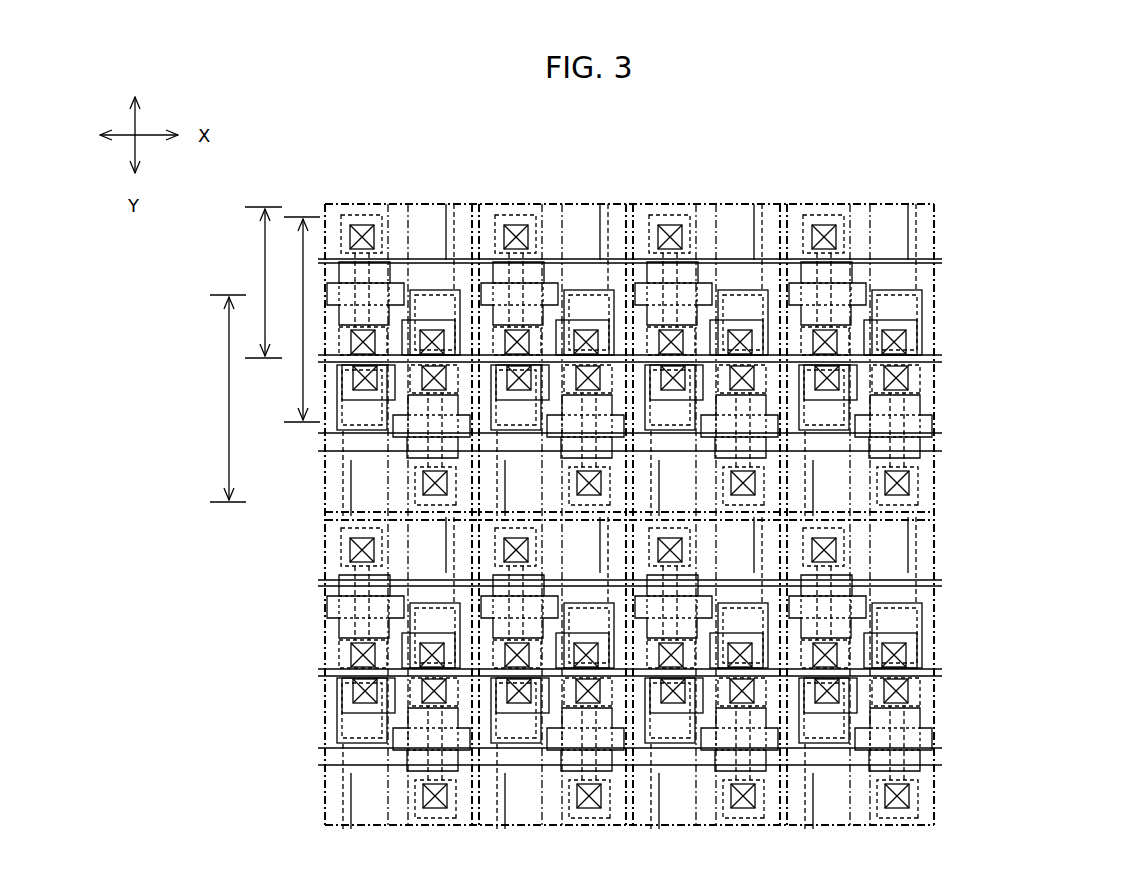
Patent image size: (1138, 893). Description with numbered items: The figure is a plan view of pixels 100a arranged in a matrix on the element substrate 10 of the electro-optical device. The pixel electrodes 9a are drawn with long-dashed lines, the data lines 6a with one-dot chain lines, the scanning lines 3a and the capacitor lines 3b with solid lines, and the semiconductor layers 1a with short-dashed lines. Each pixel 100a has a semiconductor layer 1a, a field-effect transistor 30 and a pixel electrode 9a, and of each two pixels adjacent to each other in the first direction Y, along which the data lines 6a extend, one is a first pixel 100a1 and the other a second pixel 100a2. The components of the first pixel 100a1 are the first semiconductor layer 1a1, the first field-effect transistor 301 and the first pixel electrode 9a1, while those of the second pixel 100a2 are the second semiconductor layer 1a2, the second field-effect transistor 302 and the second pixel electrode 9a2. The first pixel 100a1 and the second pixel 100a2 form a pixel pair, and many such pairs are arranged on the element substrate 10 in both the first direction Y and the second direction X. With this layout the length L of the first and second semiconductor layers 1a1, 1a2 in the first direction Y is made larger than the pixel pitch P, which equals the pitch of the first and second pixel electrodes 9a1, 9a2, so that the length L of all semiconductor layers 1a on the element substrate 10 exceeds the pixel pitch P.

The element substrate 10 is at (487, 88).
The pixel 100a is at (634, 471).
The first pixel 100a1 is at (432, 222).
The second pixel 100a2 is at (488, 507).
The field-effect transistor 30 is at (629, 466).
The first field-effect transistor 301 is at (551, 258).
The second field-effect transistor 302 is at (608, 457).
The pixel electrode 9a is at (583, 495).
The first pixel electrode 9a1 is at (606, 217).
The second pixel electrode 9a2 is at (452, 438).
The semiconductor layer 1a is at (629, 480).
The first semiconductor layer 1a1 is at (525, 297).
The second semiconductor layer 1a2 is at (562, 415).
The scanning line 3a is at (946, 258).
The capacitor line 3b is at (946, 349).
The data line 6a is at (408, 827).
The pixel pitch P is at (263, 282).
The length of semiconductor layer L is at (265, 359).